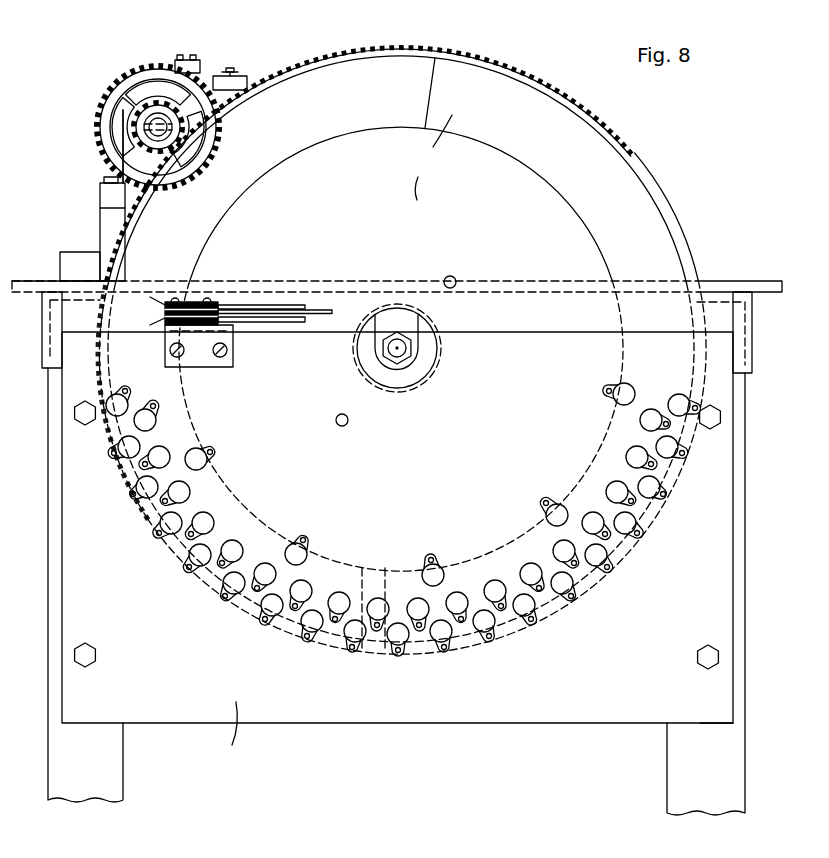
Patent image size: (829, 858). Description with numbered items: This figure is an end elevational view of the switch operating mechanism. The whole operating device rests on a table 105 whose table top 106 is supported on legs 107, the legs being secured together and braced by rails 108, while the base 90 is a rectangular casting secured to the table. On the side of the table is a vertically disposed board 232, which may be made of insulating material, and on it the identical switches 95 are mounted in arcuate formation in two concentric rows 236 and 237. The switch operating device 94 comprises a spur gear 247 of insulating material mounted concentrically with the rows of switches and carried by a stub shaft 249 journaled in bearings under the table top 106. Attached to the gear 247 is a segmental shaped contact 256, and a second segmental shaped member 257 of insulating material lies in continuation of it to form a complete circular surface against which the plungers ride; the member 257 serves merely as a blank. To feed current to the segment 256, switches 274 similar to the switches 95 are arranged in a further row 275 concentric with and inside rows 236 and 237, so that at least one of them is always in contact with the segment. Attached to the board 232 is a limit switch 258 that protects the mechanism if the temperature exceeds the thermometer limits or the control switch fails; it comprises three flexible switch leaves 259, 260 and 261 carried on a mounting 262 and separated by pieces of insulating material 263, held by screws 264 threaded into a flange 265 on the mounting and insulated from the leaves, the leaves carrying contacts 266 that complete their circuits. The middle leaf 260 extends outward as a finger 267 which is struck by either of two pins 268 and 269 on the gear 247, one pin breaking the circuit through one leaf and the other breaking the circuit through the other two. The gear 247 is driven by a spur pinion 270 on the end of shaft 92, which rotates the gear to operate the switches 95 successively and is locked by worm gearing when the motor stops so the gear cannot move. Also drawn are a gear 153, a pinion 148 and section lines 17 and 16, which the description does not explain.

The gear wheel 153 is at (108, 88).
The spur pinion 270 is at (133, 115).
The pinion 148 is at (135, 158).
The shaft 92 is at (160, 135).
The base 90 is at (65, 268).
The rails 108 is at (45, 310).
The segmental shaped contact 256 is at (318, 70).
The spur gear 247 is at (485, 58).
The segmental shaped member 257 is at (508, 100).
The switch operating device 94 is at (635, 150).
The table top 106 is at (726, 285).
The table 105 is at (755, 305).
The legs 107 is at (105, 767).
The row of switches 236 is at (140, 463).
The board 232 is at (527, 708).
The stub shaft 249 is at (405, 358).
The screws 264 is at (207, 298).
The mounting 262 is at (170, 340).
The limit switch 258 is at (277, 305).
The contacts 266 is at (295, 317).
The switch leaf 260 is at (283, 322).
The pieces of insulating material 263 is at (222, 300).
The switch leaf 259 is at (250, 305).
The finger 267 is at (330, 313).
The flange 265 is at (232, 330).
The switch leaf 261 is at (272, 323).
The pin 268 is at (455, 276).
The pin 269 is at (348, 424).
The switches 274 is at (147, 410).
The switches 95 is at (195, 548).
The row of switches 237 is at (165, 433).
The row of switches 275 is at (402, 560).
The section line 17- 17 is at (377, 513).
The section line 16- 16 is at (327, 659).